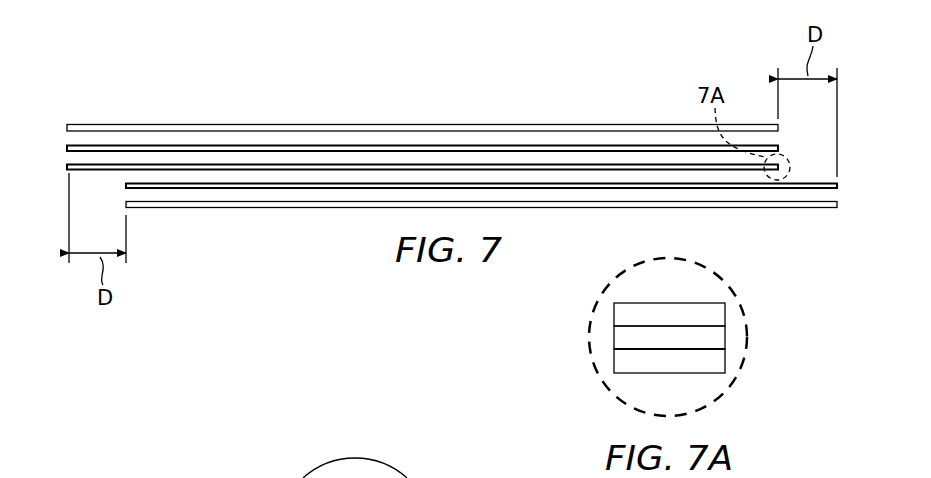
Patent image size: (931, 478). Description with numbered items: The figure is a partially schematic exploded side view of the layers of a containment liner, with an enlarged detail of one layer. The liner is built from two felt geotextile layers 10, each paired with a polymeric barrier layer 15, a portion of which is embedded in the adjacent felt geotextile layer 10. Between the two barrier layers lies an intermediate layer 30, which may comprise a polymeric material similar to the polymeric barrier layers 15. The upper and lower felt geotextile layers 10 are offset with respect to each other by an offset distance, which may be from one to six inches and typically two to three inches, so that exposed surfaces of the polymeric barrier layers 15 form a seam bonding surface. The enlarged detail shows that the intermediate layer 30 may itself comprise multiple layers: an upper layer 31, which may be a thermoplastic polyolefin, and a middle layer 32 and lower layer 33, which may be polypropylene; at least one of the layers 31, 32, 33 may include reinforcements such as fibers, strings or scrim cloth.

In FIG. 7, the felt geotextile layer 10 is at (121, 125).
In FIG. 7, the polymeric barrier layer 15 is at (67, 148).
In FIG. 7, the intermediate layer 30 is at (67, 166).
In FIG. 7A, the upper layer 31 is at (715, 315).
In FIG. 7A, the middle layer 32 is at (715, 337).
In FIG. 7A, the lower layer 33 is at (717, 358).